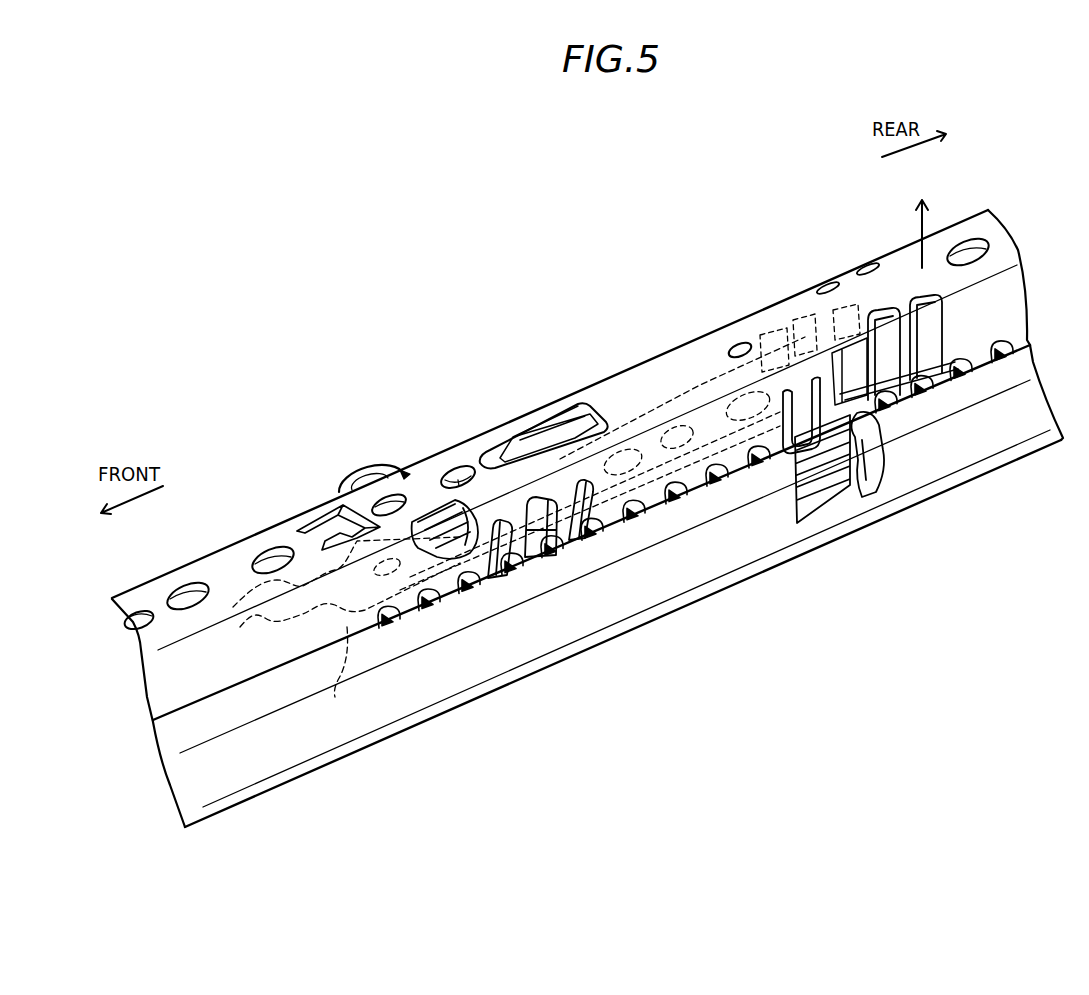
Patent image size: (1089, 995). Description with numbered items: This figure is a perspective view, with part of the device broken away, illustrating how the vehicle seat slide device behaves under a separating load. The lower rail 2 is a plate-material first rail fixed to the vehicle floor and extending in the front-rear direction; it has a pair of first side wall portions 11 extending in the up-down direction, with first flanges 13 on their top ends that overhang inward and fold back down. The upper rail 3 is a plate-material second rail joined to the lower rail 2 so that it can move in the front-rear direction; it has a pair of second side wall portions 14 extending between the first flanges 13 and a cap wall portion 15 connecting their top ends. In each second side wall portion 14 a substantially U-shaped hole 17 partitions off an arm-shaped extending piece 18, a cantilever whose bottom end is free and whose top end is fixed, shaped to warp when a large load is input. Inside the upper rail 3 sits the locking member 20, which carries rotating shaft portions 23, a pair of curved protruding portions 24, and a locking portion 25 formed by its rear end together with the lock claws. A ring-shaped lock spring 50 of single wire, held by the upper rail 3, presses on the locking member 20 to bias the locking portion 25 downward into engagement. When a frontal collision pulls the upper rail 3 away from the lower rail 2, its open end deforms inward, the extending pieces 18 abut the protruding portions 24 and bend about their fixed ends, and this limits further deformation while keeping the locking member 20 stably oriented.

The lower rail 2 is at (587, 533).
The upper rail 3 is at (522, 407).
The first side wall portions 11 is at (285, 740).
The first flanges 13 is at (223, 723).
The second side wall portions 14 is at (180, 665).
The cap wall portion 15 is at (233, 570).
The hole 17 is at (797, 477).
The extending piece 18 is at (813, 510).
The locking member 20 is at (346, 633).
The rotating shaft portions 23 is at (533, 550).
The protruding portions 24 is at (735, 372).
The locking portion 25 is at (948, 366).
The lock spring 50 is at (373, 463).